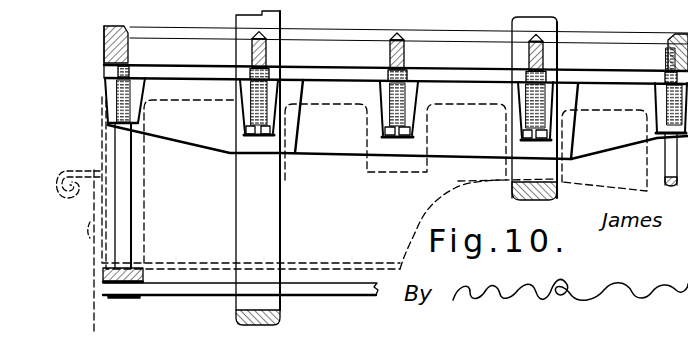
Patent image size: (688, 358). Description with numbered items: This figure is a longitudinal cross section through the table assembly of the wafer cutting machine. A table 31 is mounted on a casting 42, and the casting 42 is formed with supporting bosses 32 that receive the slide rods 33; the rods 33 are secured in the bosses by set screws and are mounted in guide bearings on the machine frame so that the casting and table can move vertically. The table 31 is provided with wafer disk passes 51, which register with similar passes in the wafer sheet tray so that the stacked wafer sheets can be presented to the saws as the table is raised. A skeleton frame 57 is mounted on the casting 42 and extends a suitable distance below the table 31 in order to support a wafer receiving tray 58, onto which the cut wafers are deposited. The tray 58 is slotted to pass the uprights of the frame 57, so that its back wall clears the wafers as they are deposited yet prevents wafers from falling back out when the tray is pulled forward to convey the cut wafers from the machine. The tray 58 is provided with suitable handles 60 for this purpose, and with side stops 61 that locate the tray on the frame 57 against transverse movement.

The table 31 is at (668, 54).
The supporting boss 32 is at (231, 152).
The slide rod 33 is at (244, 242).
The casting 42 is at (352, 140).
The wafer disk pass 51 is at (175, 47).
The skeleton frame 57 is at (358, 300).
The wafer receiving tray 58 is at (359, 255).
The handle 60 is at (59, 174).
The side stop 61 is at (93, 303).